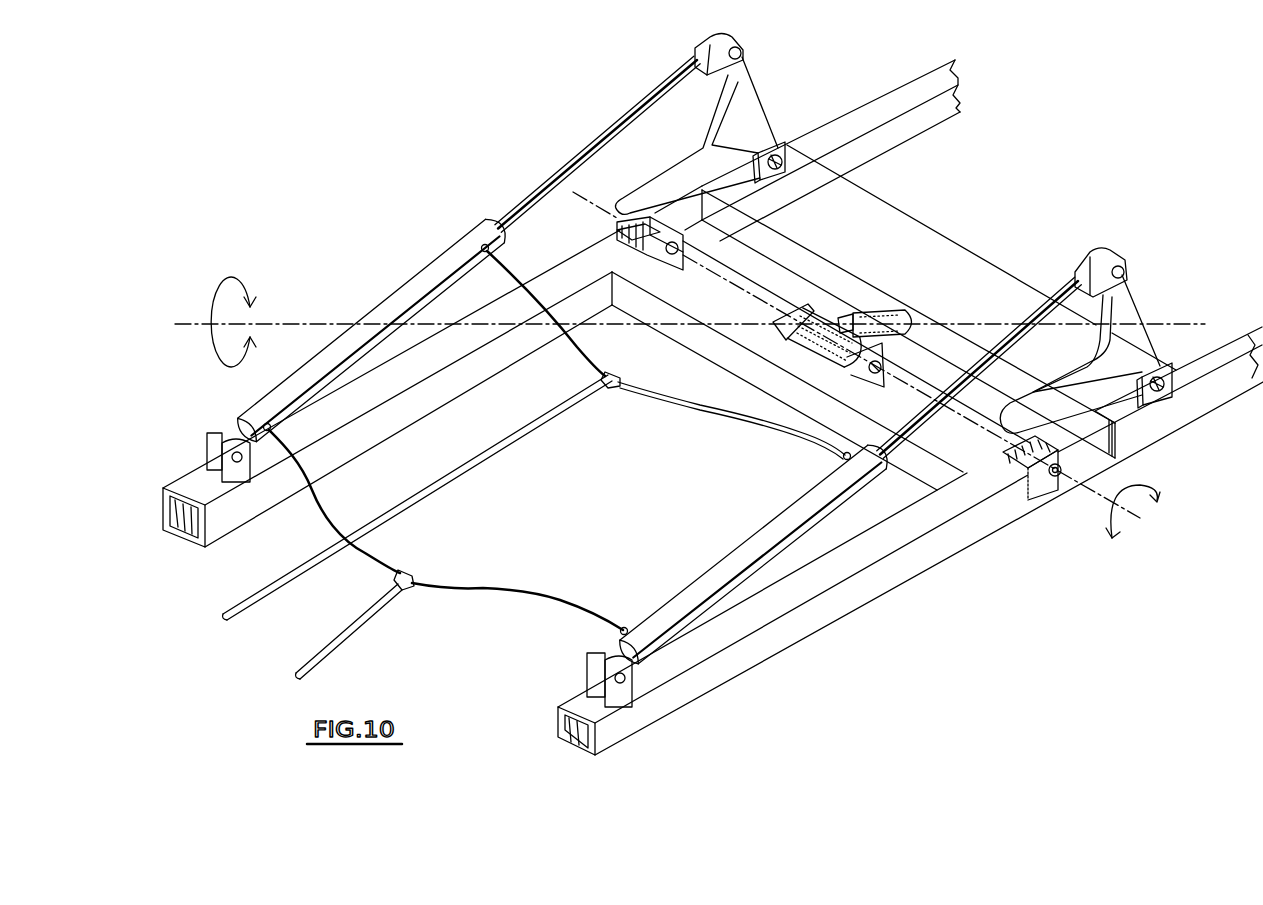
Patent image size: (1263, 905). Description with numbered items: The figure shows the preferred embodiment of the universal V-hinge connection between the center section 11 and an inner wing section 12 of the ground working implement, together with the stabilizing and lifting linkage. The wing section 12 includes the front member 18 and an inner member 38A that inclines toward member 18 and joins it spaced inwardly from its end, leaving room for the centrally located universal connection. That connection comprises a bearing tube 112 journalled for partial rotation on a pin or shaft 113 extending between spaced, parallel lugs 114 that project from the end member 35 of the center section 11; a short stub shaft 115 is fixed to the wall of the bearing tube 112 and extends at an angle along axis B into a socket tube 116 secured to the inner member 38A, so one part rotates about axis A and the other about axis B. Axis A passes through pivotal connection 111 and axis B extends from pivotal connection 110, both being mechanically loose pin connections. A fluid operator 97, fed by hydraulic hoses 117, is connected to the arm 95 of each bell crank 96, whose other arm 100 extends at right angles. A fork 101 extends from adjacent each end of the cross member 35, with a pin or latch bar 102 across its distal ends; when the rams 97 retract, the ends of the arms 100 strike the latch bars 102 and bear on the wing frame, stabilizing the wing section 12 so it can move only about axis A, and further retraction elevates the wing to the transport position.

The center section 11 is at (455, 400).
The inner wing section 12 is at (1212, 405).
The front member of wing frame 18 is at (898, 92).
The cross member 35 is at (950, 456).
The inner member 38A is at (958, 303).
The arm of bell crank 95 is at (755, 85).
The bell crank 96 is at (750, 120).
The fluid operator 97 is at (692, 580).
The arm of bell crank 100 is at (660, 184).
The fork 101 is at (658, 256).
The pin or latch bar 102 is at (623, 233).
The pivotal connection 110 is at (689, 294).
The pivotal connection 111 is at (907, 390).
The bearing tube 112 is at (823, 349).
The pin or shaft 113 is at (869, 376).
The lug 114 is at (805, 301).
The stub shaft 115 is at (852, 288).
The socket tube 116 is at (890, 312).
The hydraulic hose 117 is at (387, 572).